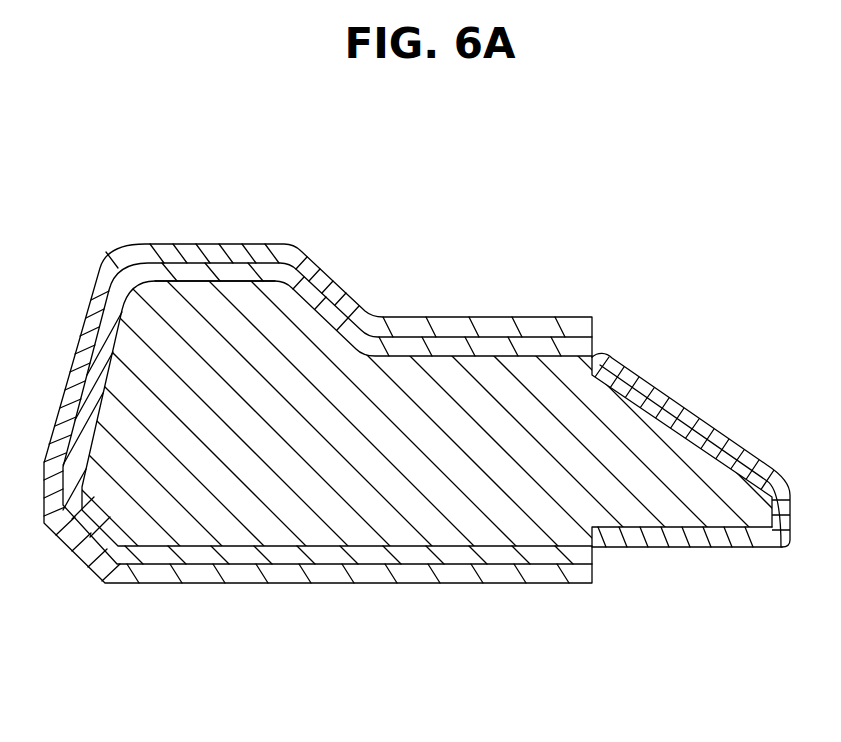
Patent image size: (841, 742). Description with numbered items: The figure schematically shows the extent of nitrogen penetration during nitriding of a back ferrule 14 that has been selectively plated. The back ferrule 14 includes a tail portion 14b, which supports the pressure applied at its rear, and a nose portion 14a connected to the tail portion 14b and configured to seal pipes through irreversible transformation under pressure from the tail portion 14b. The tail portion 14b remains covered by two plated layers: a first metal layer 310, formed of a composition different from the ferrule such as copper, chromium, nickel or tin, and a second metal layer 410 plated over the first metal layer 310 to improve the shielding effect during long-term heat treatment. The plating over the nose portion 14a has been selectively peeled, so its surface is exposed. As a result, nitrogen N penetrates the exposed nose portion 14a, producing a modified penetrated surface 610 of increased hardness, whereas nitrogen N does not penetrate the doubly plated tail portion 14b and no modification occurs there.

The back ferrule 14 is at (437, 403).
The nose portion 14a is at (709, 470).
The tail portion 14b is at (193, 318).
The first metal layer 310 is at (327, 580).
The second metal layer 410 is at (200, 583).
The penetrated surface 610 is at (656, 545).
The nitrogen N is at (757, 440).